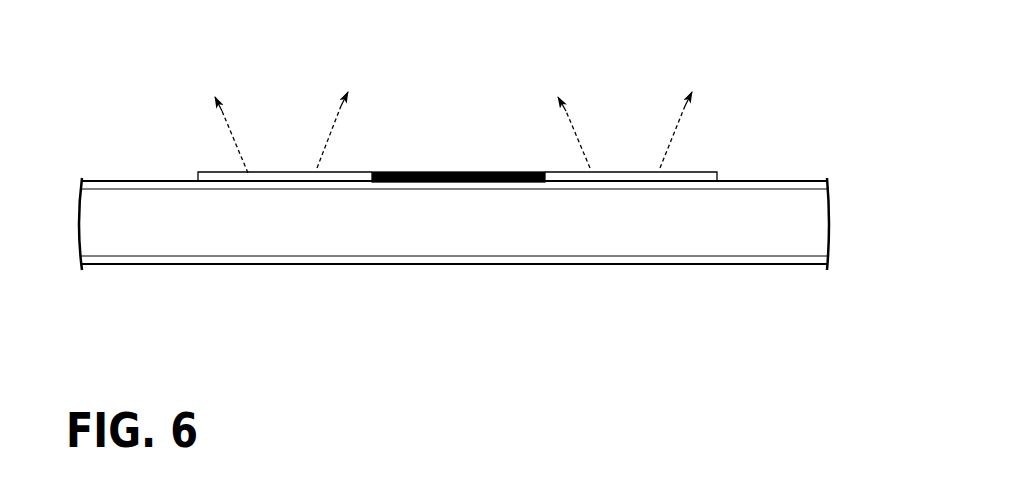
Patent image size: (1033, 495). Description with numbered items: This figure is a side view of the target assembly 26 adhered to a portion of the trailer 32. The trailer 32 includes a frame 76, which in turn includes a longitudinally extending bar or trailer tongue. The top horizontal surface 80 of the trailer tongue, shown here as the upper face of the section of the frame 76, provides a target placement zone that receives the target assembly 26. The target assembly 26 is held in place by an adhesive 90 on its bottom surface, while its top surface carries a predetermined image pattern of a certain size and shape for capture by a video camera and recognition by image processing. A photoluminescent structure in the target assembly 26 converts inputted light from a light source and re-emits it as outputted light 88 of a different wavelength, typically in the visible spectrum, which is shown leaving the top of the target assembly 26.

The target assembly 26 is at (621, 166).
The trailer 32 is at (137, 268).
The frame 76 is at (375, 225).
The top horizontal surface 80 is at (129, 181).
The outputted light 88 is at (333, 130).
The adhesive 90 is at (715, 177).